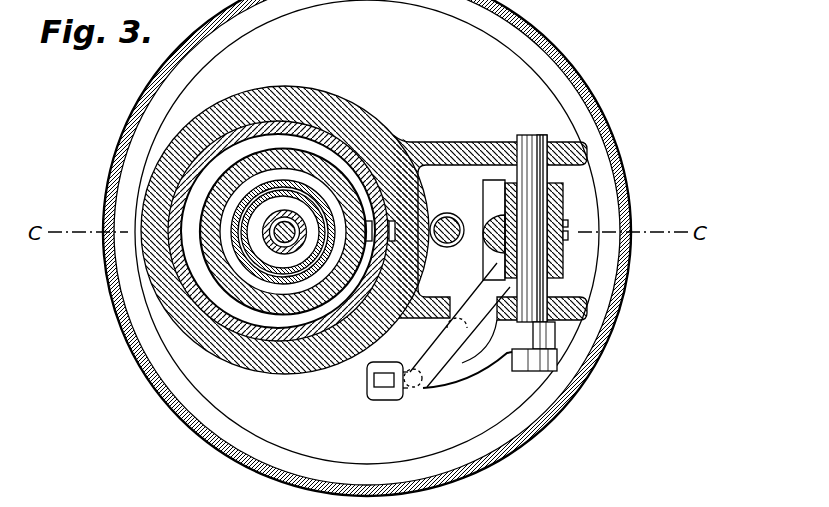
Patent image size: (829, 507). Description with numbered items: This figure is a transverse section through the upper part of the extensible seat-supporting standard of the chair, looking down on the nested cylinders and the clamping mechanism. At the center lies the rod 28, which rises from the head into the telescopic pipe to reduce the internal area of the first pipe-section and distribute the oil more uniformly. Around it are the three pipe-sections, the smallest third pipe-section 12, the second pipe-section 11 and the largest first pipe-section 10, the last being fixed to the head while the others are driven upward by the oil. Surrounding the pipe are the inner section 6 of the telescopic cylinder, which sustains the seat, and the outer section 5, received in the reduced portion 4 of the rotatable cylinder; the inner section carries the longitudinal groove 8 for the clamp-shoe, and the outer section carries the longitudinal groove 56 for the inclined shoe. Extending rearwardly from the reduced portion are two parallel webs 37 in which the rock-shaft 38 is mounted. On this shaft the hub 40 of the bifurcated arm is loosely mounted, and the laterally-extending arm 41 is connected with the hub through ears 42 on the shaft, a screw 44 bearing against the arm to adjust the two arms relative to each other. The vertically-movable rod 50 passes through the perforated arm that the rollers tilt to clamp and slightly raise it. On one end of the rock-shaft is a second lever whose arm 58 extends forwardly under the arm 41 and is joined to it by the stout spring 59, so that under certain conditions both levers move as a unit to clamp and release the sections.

The reduced portion of the rotatable cylinder 4 is at (293, 97).
The outer section of the telescopic cylinder 5 is at (270, 337).
The inner section of the telescopic cylinder 6 is at (307, 337).
The longitudinal groove 8 is at (423, 252).
The first pipe-section 10 is at (268, 182).
The second pipe-section 11 is at (307, 197).
The third pipe-section 12 is at (307, 231).
The rod 28 is at (283, 240).
The parallel webs or walls 37 is at (458, 152).
The rock-shaft 38 is at (532, 136).
The hub 40 is at (562, 212).
The laterally-extending arm 41 is at (490, 205).
The ears 42 is at (565, 190).
The screw 44 is at (573, 232).
The vertically-movable rod 50 is at (452, 237).
The longitudinal groove 56 is at (413, 192).
The arm of lever b 58 is at (469, 368).
The stout spring 59 is at (405, 386).